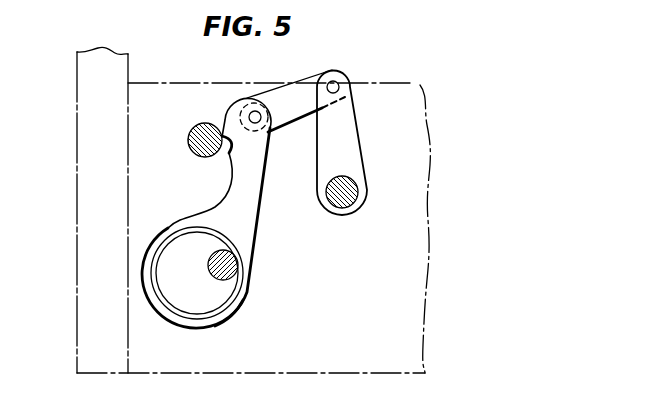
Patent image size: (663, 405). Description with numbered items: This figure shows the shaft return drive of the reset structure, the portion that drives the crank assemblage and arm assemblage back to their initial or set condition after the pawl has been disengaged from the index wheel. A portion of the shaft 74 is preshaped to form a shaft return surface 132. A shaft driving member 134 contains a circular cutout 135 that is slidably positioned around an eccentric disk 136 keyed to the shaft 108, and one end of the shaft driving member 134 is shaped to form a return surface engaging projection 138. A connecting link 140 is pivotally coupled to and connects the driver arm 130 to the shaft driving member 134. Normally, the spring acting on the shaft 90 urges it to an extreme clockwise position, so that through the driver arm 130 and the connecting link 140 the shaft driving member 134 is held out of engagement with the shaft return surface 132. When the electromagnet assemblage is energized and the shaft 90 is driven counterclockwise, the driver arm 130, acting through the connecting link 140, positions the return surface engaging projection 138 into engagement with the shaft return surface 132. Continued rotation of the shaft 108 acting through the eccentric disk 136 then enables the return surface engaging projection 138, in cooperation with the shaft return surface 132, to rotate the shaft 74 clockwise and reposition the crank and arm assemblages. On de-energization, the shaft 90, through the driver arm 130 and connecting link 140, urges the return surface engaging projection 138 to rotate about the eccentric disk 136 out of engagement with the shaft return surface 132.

The shaft 74 is at (192, 151).
The shaft 90 is at (344, 200).
The shaft 108 is at (213, 268).
The driver arm 130 is at (354, 108).
The shaft return surface 132 is at (212, 126).
The shaft driving member 134 is at (258, 236).
The circular cutout 135 is at (225, 312).
The eccentric disk 136 is at (175, 243).
The return surface engaging projection 138 is at (222, 133).
The connecting link 140 is at (291, 132).